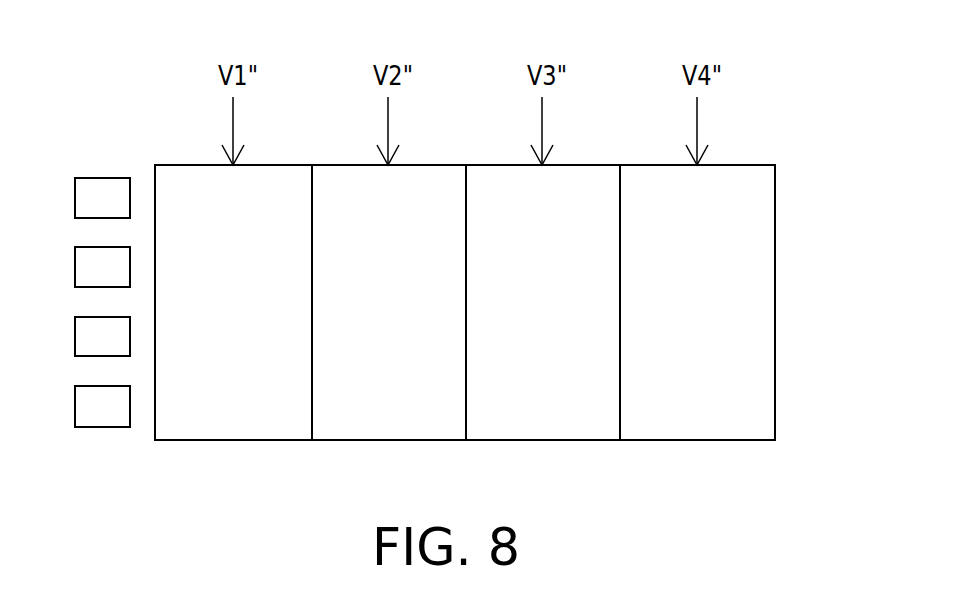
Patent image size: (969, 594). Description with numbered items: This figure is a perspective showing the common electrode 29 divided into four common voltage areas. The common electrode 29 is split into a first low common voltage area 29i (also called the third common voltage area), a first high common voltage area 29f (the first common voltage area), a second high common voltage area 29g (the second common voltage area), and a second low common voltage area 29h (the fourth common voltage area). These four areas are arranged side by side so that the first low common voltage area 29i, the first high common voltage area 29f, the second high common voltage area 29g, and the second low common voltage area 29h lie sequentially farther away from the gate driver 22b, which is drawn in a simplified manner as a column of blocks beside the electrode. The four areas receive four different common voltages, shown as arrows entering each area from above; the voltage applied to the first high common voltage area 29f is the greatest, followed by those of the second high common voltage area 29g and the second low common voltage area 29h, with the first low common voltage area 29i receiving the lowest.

The common electrode 29 is at (802, 303).
The first low common voltage area 29i is at (257, 317).
The first high common voltage area 29f is at (412, 317).
The second high common voltage area 29g is at (566, 317).
The second low common voltage area 29h is at (720, 317).
The gate driver 22b is at (74, 199).